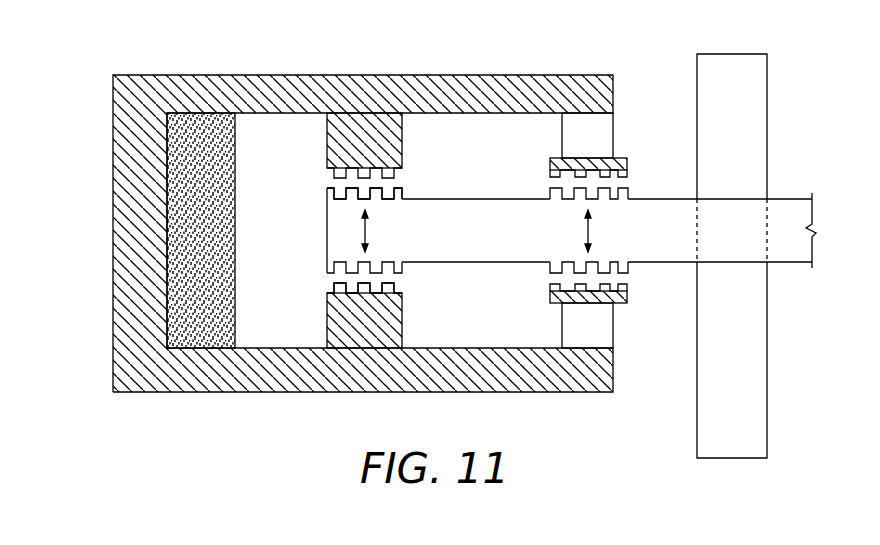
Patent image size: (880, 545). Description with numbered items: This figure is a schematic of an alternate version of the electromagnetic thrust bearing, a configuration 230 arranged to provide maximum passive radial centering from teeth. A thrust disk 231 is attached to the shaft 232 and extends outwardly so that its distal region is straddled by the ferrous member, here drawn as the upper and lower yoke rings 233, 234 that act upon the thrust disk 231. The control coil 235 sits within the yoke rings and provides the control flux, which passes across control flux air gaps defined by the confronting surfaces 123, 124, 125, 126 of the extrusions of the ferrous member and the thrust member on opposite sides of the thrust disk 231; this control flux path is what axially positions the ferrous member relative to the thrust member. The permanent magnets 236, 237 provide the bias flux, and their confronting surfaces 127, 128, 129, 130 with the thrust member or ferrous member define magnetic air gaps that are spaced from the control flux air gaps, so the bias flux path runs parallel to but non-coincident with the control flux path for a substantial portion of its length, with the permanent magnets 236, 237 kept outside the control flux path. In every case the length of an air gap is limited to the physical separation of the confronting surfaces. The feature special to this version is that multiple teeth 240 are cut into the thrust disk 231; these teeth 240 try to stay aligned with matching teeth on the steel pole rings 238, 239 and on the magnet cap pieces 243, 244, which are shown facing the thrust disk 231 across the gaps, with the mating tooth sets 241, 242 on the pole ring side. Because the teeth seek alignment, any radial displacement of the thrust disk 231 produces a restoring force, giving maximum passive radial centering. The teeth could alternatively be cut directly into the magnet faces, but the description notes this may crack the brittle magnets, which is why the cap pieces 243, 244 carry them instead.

The configuration 230 is at (136, 40).
The thrust disk 231 is at (772, 198).
The shaft 232 is at (768, 345).
The upper yoke ring 233 is at (255, 393).
The lower yoke ring 234 is at (252, 75).
The control coil 235 is at (237, 222).
The permanent magnet 236 is at (613, 135).
The permanent magnet 237 is at (613, 332).
The steel pole ring 238 is at (327, 162).
The steel pole ring 239 is at (327, 318).
The teeth 240 is at (368, 235).
The upper stator pole teeth 241 is at (403, 177).
The lower stator pole teeth 242 is at (402, 288).
The magnet cap piece 243 is at (627, 173).
The magnet cap piece 244 is at (627, 292).
The confronting surface 123 is at (402, 183).
The confronting surface 124 is at (404, 187).
The confronting surface 125 is at (327, 287).
The confronting surface 126 is at (327, 275).
The confronting surface 127 is at (600, 179).
The confronting surface 128 is at (620, 188).
The confronting surface 129 is at (553, 283).
The confronting surface 130 is at (627, 272).